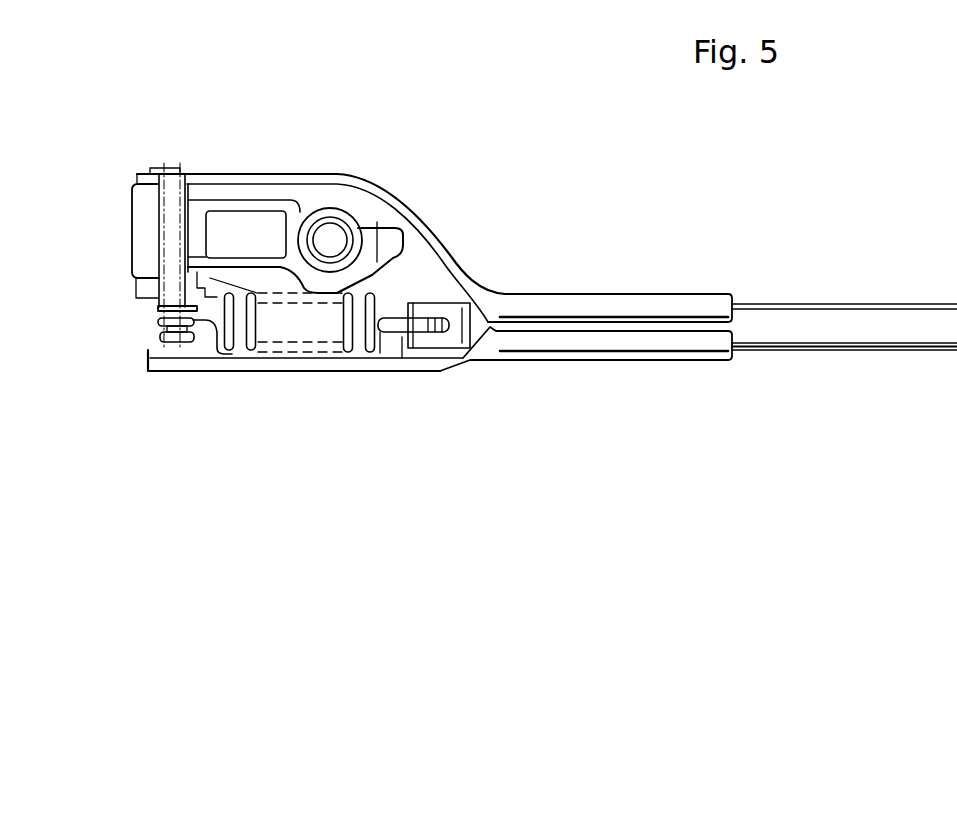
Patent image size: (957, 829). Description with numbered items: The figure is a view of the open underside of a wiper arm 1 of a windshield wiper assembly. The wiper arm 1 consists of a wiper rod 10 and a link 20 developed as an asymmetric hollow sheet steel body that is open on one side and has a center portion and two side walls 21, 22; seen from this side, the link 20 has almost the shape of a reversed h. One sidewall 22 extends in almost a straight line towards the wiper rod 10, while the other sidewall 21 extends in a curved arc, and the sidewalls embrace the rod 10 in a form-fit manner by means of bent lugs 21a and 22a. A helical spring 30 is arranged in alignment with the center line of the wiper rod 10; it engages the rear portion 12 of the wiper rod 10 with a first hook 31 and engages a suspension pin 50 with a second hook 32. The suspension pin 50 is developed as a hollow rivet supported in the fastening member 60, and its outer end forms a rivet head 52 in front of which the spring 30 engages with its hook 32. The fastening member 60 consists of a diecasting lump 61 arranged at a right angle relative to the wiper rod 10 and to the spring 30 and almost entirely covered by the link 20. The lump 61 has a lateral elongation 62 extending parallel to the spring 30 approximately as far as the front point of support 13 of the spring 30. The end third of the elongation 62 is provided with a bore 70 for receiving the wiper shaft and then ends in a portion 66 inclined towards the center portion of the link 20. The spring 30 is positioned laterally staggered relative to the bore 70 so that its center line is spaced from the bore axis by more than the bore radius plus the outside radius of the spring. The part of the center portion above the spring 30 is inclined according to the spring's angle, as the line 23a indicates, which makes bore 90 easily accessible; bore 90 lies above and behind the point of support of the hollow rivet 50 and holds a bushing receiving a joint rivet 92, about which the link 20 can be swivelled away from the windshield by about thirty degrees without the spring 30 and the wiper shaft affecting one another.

The wiper arm 1 is at (822, 230).
The wiper rod 10 is at (897, 342).
The rear portion of the wiper rod 12 is at (437, 338).
The front point of support 13 is at (462, 345).
The link 20 is at (437, 175).
The sidewall 21 is at (340, 176).
The bent lug 21a is at (620, 310).
The sidewall 22 is at (287, 362).
The bent lug 22a is at (620, 345).
The inclined line of the center portion 23a is at (254, 292).
The helical spring 30 is at (366, 297).
The first hook 31 is at (418, 337).
The second hook 32 is at (203, 336).
The suspension pin 50 is at (170, 300).
The rivet head 52 is at (168, 353).
The fastening member 60 is at (101, 262).
The diecasting lump 61 is at (145, 212).
The lateral elongation 62 is at (230, 198).
The inclined portion 66 is at (390, 238).
The bore 70 is at (332, 240).
The bore 90 is at (165, 290).
The joint rivet 92 is at (152, 170).